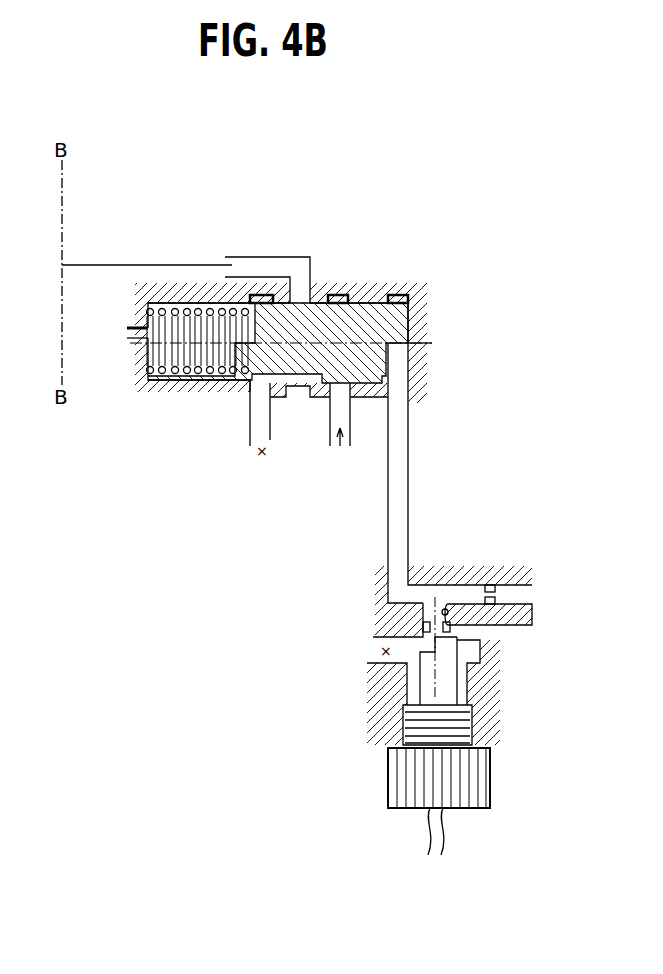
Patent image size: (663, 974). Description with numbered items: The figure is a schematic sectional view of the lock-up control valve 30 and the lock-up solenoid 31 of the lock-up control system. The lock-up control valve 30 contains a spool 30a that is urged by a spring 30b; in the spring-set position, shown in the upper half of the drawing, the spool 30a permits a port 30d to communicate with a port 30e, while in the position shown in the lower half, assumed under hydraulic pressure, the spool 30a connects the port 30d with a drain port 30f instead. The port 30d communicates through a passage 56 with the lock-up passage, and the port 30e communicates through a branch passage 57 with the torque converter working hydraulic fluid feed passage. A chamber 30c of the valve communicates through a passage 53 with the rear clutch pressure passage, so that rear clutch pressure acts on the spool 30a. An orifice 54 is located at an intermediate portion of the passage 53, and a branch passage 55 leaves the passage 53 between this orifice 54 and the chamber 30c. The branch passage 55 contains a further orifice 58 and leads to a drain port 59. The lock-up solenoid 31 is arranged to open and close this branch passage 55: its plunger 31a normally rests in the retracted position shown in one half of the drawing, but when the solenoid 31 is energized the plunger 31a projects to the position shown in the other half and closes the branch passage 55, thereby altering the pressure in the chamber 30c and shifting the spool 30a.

The lock-up control valve 30 is at (388, 268).
The spool 30a is at (205, 382).
The spring 30b is at (155, 364).
The chamber 30c is at (400, 358).
The port 30d is at (298, 298).
The port 30e is at (341, 390).
The drain port 30f is at (262, 390).
The lock-up solenoid 31 is at (392, 790).
The plunger 31a is at (462, 655).
The passage 53 is at (410, 505).
The orifice 54 is at (489, 584).
The branch passage 55 is at (450, 622).
The passage 56 is at (178, 264).
The branch passage 57 is at (350, 428).
The orifice 58 is at (431, 627).
The drain port 59 is at (368, 664).